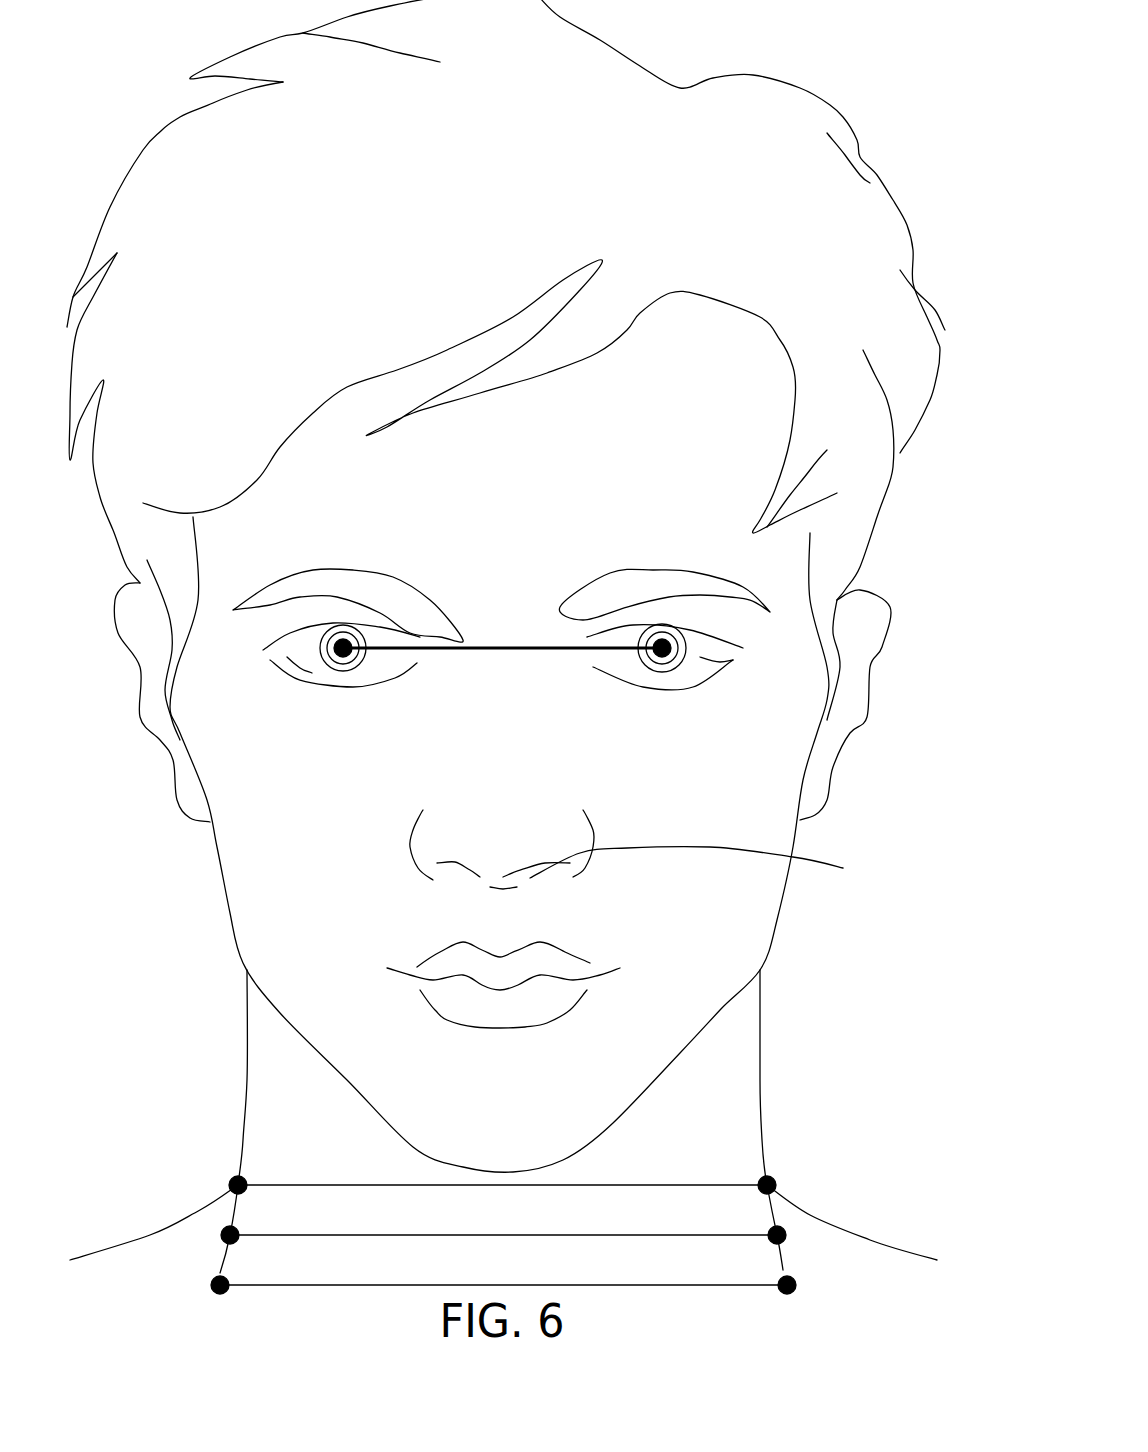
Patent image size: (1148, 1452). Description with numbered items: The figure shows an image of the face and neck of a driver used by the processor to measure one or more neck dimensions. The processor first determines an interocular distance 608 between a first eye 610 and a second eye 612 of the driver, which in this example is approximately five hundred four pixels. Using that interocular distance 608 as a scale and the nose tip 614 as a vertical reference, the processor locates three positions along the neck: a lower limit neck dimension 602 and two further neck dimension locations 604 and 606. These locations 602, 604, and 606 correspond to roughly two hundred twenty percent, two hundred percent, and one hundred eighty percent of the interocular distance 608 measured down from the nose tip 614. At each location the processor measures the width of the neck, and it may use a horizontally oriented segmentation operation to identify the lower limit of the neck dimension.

The lower limit neck dimension 602 is at (210, 1285).
The neck dimension location 604 is at (220, 1235).
The neck dimension location 606 is at (460, 1186).
The interocular distance 608 is at (503, 645).
The first eye 610 is at (343, 640).
The second eye 612 is at (660, 640).
The nose tip 614 is at (707, 866).